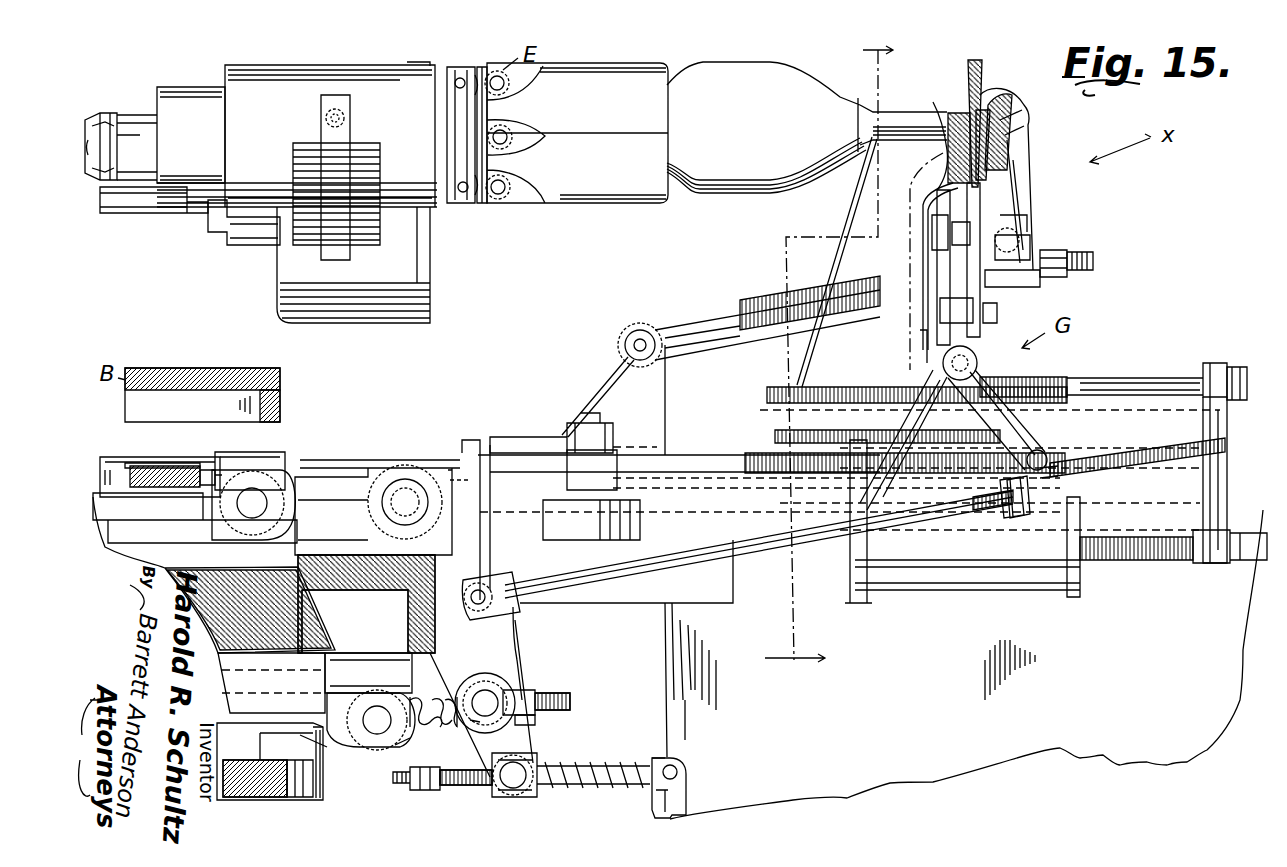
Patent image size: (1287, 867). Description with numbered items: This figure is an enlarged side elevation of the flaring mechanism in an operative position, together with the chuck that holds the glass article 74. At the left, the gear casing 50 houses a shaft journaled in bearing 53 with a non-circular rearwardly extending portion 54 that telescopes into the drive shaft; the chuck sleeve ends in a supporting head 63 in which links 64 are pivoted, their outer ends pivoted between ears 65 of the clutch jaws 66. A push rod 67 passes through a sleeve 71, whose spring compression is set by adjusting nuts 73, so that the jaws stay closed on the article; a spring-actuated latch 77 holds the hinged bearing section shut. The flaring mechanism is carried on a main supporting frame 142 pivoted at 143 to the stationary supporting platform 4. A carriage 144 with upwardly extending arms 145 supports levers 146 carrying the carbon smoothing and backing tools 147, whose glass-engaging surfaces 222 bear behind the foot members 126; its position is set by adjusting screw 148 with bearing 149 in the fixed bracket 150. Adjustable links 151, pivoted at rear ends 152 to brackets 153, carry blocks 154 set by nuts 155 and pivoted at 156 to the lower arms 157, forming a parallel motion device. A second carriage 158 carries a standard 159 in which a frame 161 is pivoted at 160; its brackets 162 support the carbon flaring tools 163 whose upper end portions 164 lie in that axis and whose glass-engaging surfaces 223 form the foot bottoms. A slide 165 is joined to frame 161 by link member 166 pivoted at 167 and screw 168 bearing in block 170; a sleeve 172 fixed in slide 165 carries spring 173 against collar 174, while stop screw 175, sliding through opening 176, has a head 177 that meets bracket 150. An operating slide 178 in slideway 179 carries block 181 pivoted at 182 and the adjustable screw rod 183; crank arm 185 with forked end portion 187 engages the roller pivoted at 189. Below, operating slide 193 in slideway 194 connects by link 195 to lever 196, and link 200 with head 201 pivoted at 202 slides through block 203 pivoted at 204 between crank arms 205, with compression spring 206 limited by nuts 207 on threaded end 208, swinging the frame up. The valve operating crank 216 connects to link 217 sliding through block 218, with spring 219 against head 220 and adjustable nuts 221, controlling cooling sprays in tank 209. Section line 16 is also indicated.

The stationary supporting platform 4 is at (225, 580).
The section line 16- 16 is at (829, 356).
The gear casing 50 is at (353, 276).
The bearing 53 is at (228, 240).
The non-circular rearwardly extending portion 54 is at (118, 214).
The supporting head 63 is at (468, 200).
The links 64 is at (486, 72).
The ears 65 is at (458, 205).
The clutch jaws 66 is at (640, 66).
The push rod 67 is at (86, 120).
The sleeve 71 is at (138, 120).
The adjusting nuts 73 is at (95, 122).
The glass article 74 is at (820, 82).
The spring-actuated latch 77 is at (318, 130).
The foot members 126 is at (975, 62).
The main supporting frame 142 is at (722, 560).
The pivot 143 is at (410, 485).
The carriage 144 is at (960, 590).
The upwardly extending arms 145 is at (915, 372).
The levers 146 is at (935, 268).
The carbon smoothing and backing tools 147 is at (940, 114).
The adjusting screw 148 is at (1135, 562).
The bearing 149 is at (1210, 564).
The fixed bracket 150 is at (1228, 486).
The adjustable links 151 is at (705, 562).
The rear ends 152 is at (520, 605).
The brackets 153 is at (472, 440).
The blocks 154 is at (1015, 560).
The nuts 155 is at (1075, 466).
The pivotal connection 156 is at (1040, 452).
The lower arms 157 is at (1005, 375).
The carriage 158 is at (768, 420).
The standard 159 is at (843, 210).
The pivot 160 is at (1012, 102).
The frame 161 is at (1025, 232).
The brackets 162 is at (1020, 288).
The carbon flaring tools 163 is at (1028, 130).
The upper end portions 164 is at (988, 112).
The slide 165 is at (590, 432).
The link member 166 is at (680, 330).
The pivot 167 is at (622, 345).
The screw 168 is at (1082, 272).
The block 170 is at (1050, 278).
The sleeve 172 is at (700, 452).
The spring 173 is at (822, 386).
The collar 174 is at (1050, 384).
The stop screw 175 is at (1120, 378).
The opening 176 is at (1205, 370).
The head 177 is at (1240, 366).
The operating slide 178 is at (118, 458).
The slideway 179 is at (335, 486).
The block 181 is at (283, 452).
The pivot 182 is at (260, 500).
The adjustable screw rod 183 is at (345, 485).
The crank arm 185 is at (208, 468).
The forked end portion 187 is at (172, 465).
The pivot 189 is at (135, 458).
The operating slide 193 is at (345, 748).
The slideway 194 is at (340, 660).
The link 195 is at (255, 798).
The lever 196 is at (292, 798).
The link 200 is at (440, 730).
The head 201 is at (408, 745).
The pivot 202 is at (376, 706).
The block 203 is at (540, 768).
The pivot 204 is at (497, 698).
The crank arms 205 is at (518, 690).
The compression spring 206 is at (450, 757).
The nuts 207 is at (540, 720).
The threaded end 208 is at (572, 700).
The tank 209 is at (1205, 753).
The valve operating crank 216 is at (652, 808).
The link 217 is at (478, 788).
The block 218 is at (520, 798).
The spring 219 is at (593, 783).
The head 220 is at (655, 760).
The adjustable nuts 221 is at (425, 792).
The glass-engaging surfaces 222 is at (948, 150).
The glass-engaging surfaces 223 is at (1018, 115).